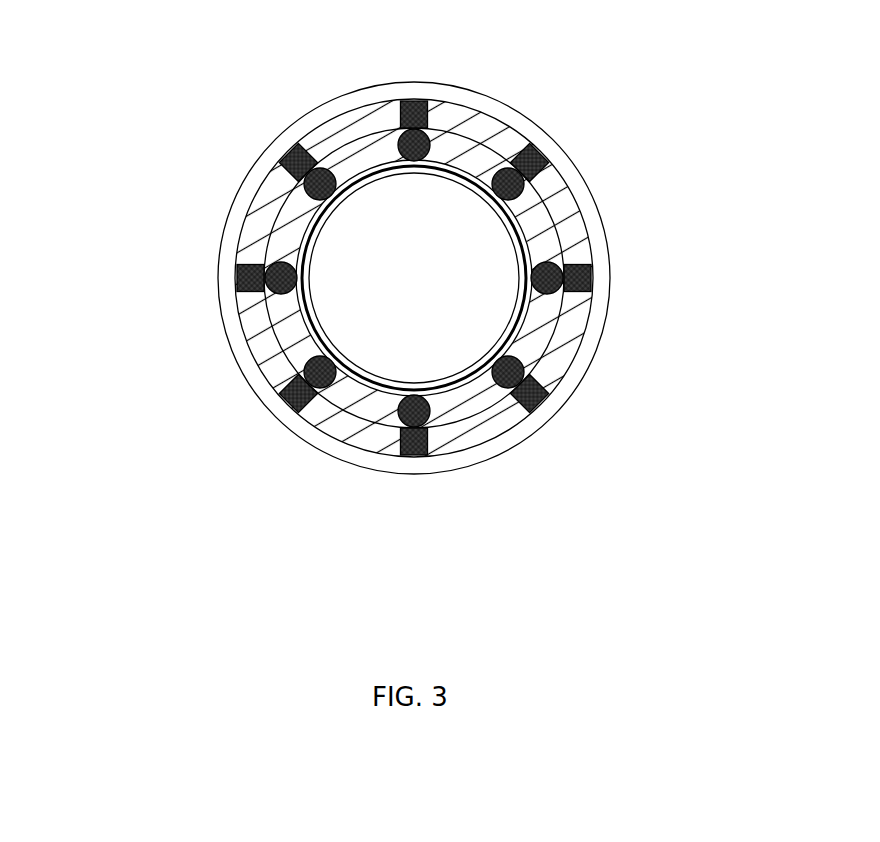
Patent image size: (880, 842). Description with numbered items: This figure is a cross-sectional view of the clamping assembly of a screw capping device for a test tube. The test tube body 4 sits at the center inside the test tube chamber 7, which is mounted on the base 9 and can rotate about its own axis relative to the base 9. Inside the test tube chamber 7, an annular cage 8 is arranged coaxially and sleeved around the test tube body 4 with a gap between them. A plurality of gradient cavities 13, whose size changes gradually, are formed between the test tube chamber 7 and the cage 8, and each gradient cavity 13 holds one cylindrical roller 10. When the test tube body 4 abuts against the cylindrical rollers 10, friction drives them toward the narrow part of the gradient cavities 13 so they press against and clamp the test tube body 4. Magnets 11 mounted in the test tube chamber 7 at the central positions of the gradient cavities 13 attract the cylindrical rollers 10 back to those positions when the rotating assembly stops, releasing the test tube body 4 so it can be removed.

The test tube body 4 is at (565, 205).
The test tube chamber 7 is at (352, 128).
The cage 8 is at (462, 158).
The base 9 is at (241, 352).
The cylindrical rollers 10 is at (508, 373).
The magnets 11 is at (580, 280).
The gradient cavities 13 is at (275, 262).